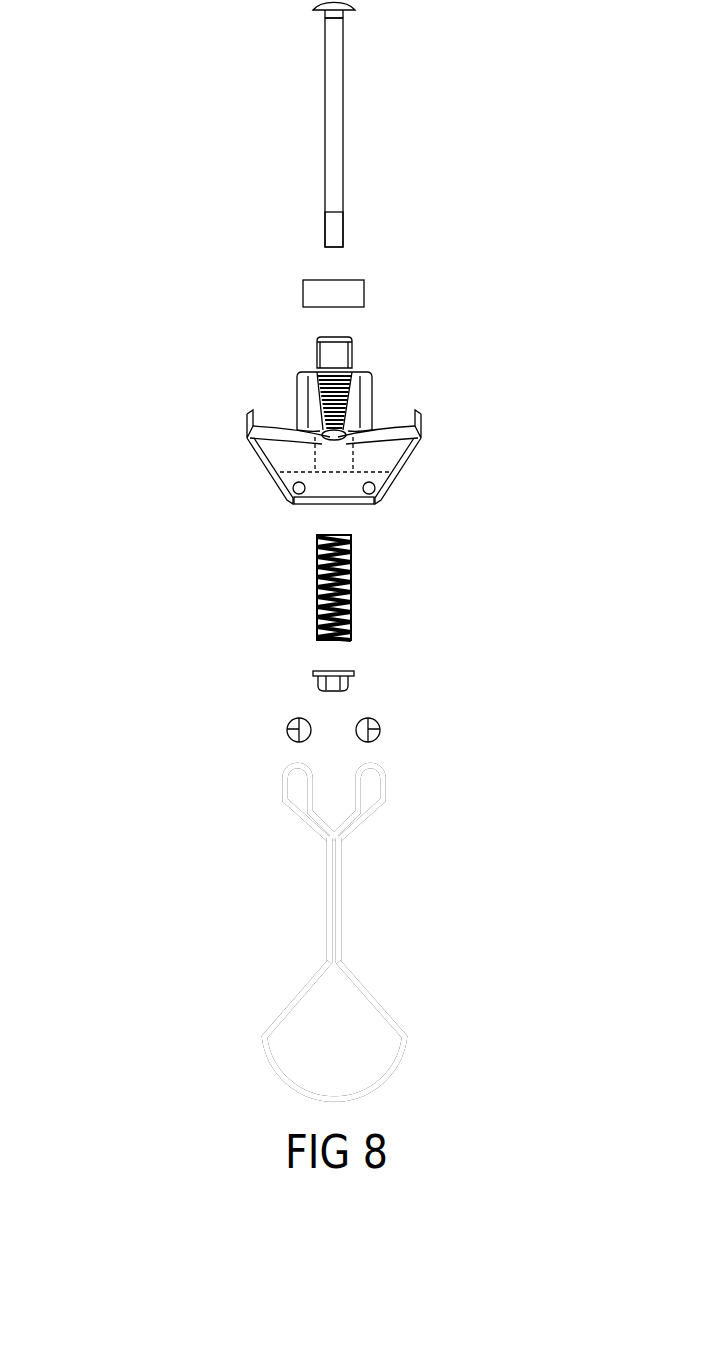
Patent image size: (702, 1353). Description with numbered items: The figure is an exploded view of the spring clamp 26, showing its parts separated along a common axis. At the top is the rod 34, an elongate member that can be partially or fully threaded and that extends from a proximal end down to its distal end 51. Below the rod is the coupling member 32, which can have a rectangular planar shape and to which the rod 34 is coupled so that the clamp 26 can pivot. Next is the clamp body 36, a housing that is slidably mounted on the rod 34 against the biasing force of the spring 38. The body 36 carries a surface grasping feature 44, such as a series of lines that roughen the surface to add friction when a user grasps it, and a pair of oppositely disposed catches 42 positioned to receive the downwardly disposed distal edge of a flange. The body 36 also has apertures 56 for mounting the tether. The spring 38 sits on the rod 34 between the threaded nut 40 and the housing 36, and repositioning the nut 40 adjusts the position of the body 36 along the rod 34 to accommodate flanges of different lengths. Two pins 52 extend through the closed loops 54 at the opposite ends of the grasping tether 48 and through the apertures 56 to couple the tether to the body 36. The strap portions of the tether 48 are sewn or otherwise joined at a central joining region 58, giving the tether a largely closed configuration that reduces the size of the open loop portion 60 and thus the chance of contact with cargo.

The spring clamp 26 is at (208, 231).
The rod 34 is at (331, 98).
The distal end 51 is at (334, 248).
The coupling member 32 is at (310, 293).
The surface grasping feature 44 is at (352, 376).
The catch 42 is at (277, 420).
The clamp body 36 is at (383, 459).
The apertures 56 is at (290, 497).
The spring 38 is at (318, 587).
The threaded nut 40 is at (352, 683).
The pins 52 is at (288, 724).
The closed loops 54 is at (297, 778).
The central joining region 58 is at (322, 842).
The grasping tether 48 is at (345, 933).
The open loop portion 60 is at (333, 1047).